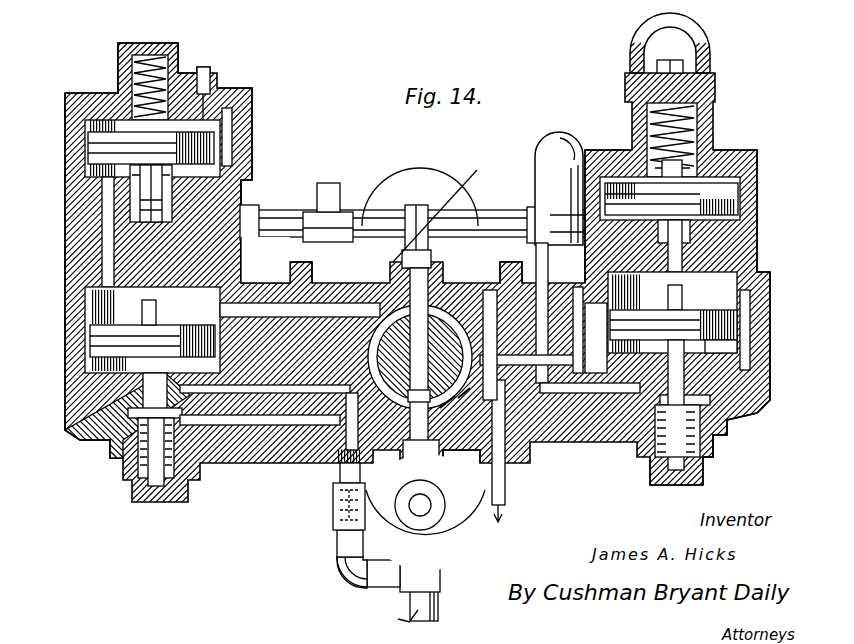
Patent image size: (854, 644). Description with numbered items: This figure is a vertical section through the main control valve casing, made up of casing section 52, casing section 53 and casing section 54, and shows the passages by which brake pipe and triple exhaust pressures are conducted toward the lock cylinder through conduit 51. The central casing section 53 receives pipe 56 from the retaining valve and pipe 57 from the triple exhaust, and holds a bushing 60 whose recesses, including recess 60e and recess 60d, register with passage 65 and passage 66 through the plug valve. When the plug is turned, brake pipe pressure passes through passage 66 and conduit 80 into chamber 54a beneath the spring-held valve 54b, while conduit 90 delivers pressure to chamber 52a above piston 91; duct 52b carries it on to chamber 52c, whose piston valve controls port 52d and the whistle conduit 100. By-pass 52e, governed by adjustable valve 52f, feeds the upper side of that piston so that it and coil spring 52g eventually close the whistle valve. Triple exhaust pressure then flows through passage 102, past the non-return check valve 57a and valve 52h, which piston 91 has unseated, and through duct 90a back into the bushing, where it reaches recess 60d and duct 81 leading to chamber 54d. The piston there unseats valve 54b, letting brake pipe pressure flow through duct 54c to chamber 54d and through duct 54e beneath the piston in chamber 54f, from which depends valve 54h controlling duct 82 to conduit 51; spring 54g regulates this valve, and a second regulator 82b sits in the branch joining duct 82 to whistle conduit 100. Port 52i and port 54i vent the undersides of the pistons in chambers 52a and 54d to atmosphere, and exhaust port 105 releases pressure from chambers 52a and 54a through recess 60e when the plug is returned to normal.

The casing section 52 is at (245, 450).
The chamber 52a is at (100, 324).
The duct 52b is at (100, 244).
The chamber 52c is at (90, 168).
The port 52d is at (245, 208).
The by-pass 52e is at (215, 122).
The adjustable valve 52f is at (214, 92).
The coil spring 52g is at (170, 62).
The valve 52h is at (112, 456).
The port 52i is at (76, 440).
The piston 91 is at (86, 352).
The conduit 90 is at (290, 275).
The duct 90a is at (200, 410).
The whistle conduit 100 is at (290, 228).
The exhaust port 105 is at (352, 283).
The pipe 56 is at (404, 240).
The casing section 53 is at (470, 282).
The duct 82 is at (537, 262).
The regulator 82b is at (548, 142).
The passage 102 is at (258, 410).
The bushing 60 is at (330, 400).
The recess 60e is at (372, 335).
The recess 60d is at (463, 450).
The passage 65 is at (406, 373).
The passage 66 is at (340, 475).
The non-return check valve 57a is at (332, 510).
The pipe 57 is at (338, 541).
The conduit 51 is at (505, 497).
The conduit 80 is at (560, 443).
The duct 81 is at (536, 343).
The casing section 54 is at (607, 422).
The chamber 54a is at (716, 424).
The valve 54b is at (644, 458).
The duct 54c is at (752, 348).
The chamber 54d is at (720, 282).
The duct 54e is at (708, 256).
The chamber 54f is at (725, 178).
The spring 54g is at (714, 128).
The valve 54h is at (640, 235).
The port 54i is at (760, 410).